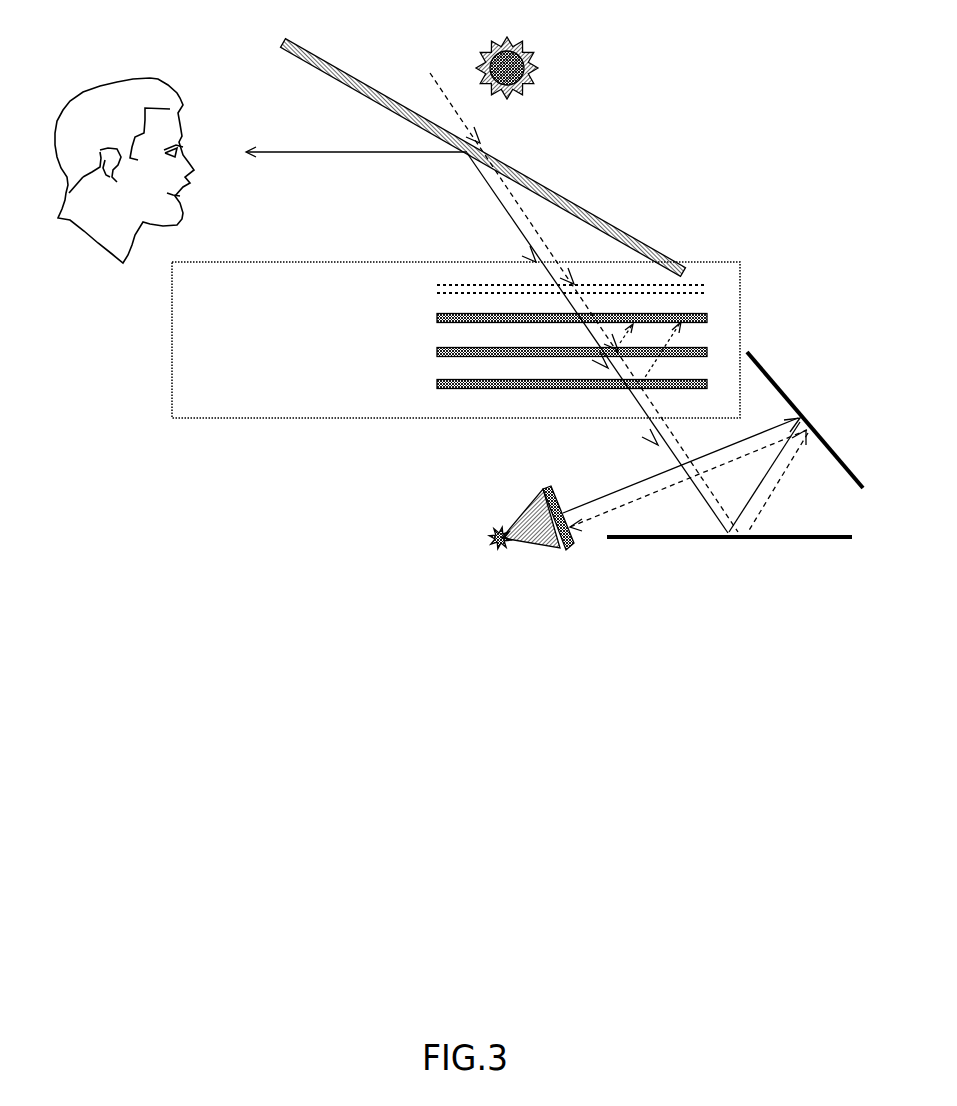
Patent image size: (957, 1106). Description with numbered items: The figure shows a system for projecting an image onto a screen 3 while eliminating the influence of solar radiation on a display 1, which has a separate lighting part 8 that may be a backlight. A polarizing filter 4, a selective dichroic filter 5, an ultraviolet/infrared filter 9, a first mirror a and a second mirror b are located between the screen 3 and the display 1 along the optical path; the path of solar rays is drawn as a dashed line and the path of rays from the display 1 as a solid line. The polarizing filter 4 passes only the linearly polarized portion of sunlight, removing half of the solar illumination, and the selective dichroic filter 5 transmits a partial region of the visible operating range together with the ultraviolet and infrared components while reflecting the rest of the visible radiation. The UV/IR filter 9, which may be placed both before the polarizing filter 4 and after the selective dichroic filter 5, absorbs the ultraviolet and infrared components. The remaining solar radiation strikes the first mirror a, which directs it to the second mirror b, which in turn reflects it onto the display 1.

The display 1 is at (567, 548).
The screen 3 is at (573, 198).
The polarizing filter 4 is at (437, 320).
The selective dichroic filter 5 is at (437, 352).
The lighting part 8 is at (495, 552).
The ultraviolet/infrared filter 9 is at (707, 287).
The first mirror a is at (729, 553).
The second mirror b is at (807, 420).